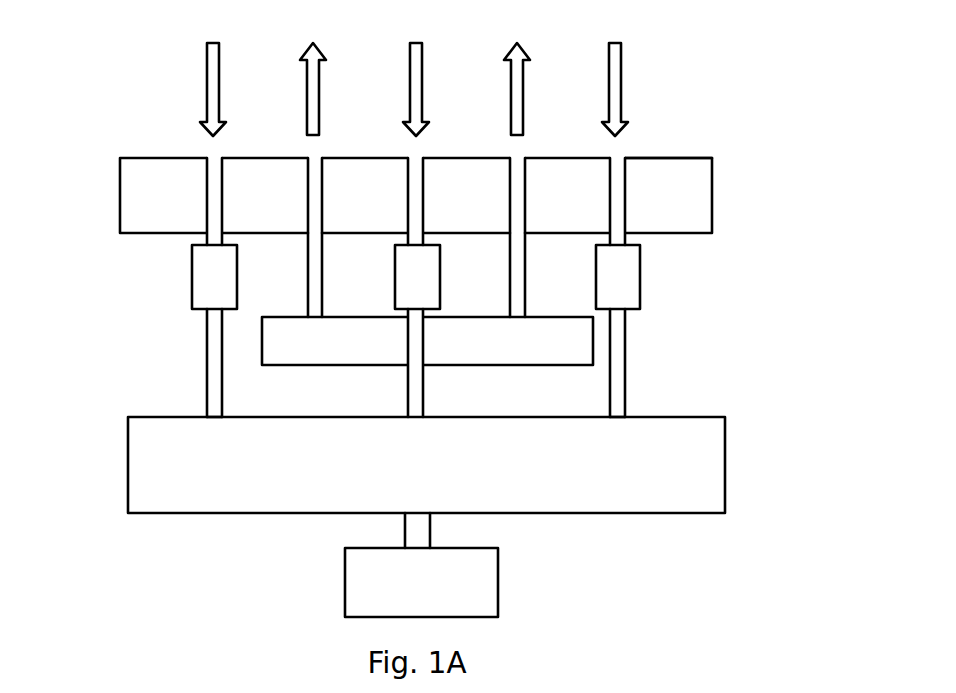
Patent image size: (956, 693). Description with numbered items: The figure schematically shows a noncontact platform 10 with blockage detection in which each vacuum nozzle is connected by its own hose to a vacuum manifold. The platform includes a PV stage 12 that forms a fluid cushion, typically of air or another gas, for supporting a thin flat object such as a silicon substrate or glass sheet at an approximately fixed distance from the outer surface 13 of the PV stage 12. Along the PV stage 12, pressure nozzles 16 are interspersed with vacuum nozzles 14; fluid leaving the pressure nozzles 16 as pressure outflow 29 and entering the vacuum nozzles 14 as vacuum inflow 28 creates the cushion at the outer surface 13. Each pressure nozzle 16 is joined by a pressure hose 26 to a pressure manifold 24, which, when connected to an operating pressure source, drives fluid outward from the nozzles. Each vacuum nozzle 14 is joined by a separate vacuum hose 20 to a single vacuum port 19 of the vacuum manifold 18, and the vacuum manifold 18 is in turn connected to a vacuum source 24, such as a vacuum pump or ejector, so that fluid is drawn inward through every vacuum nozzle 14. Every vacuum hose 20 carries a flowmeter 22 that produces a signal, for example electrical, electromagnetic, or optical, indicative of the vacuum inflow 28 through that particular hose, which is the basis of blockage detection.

The noncontact platform 10 is at (759, 148).
The PV stage 12 is at (120, 195).
The outer surface 13 is at (670, 158).
The vacuum nozzle 14 is at (213, 173).
The pressure nozzle 16 is at (317, 180).
The vacuum manifold 18 is at (128, 477).
The vacuum port 19 is at (213, 417).
The vacuum hose 20 is at (207, 379).
The flowmeter 22 is at (192, 282).
The pressure manifold / vacuum source 24 is at (318, 367).
The pressure hose 26 is at (308, 280).
The vacuum inflow 28 is at (205, 72).
The pressure outflow 29 is at (307, 68).